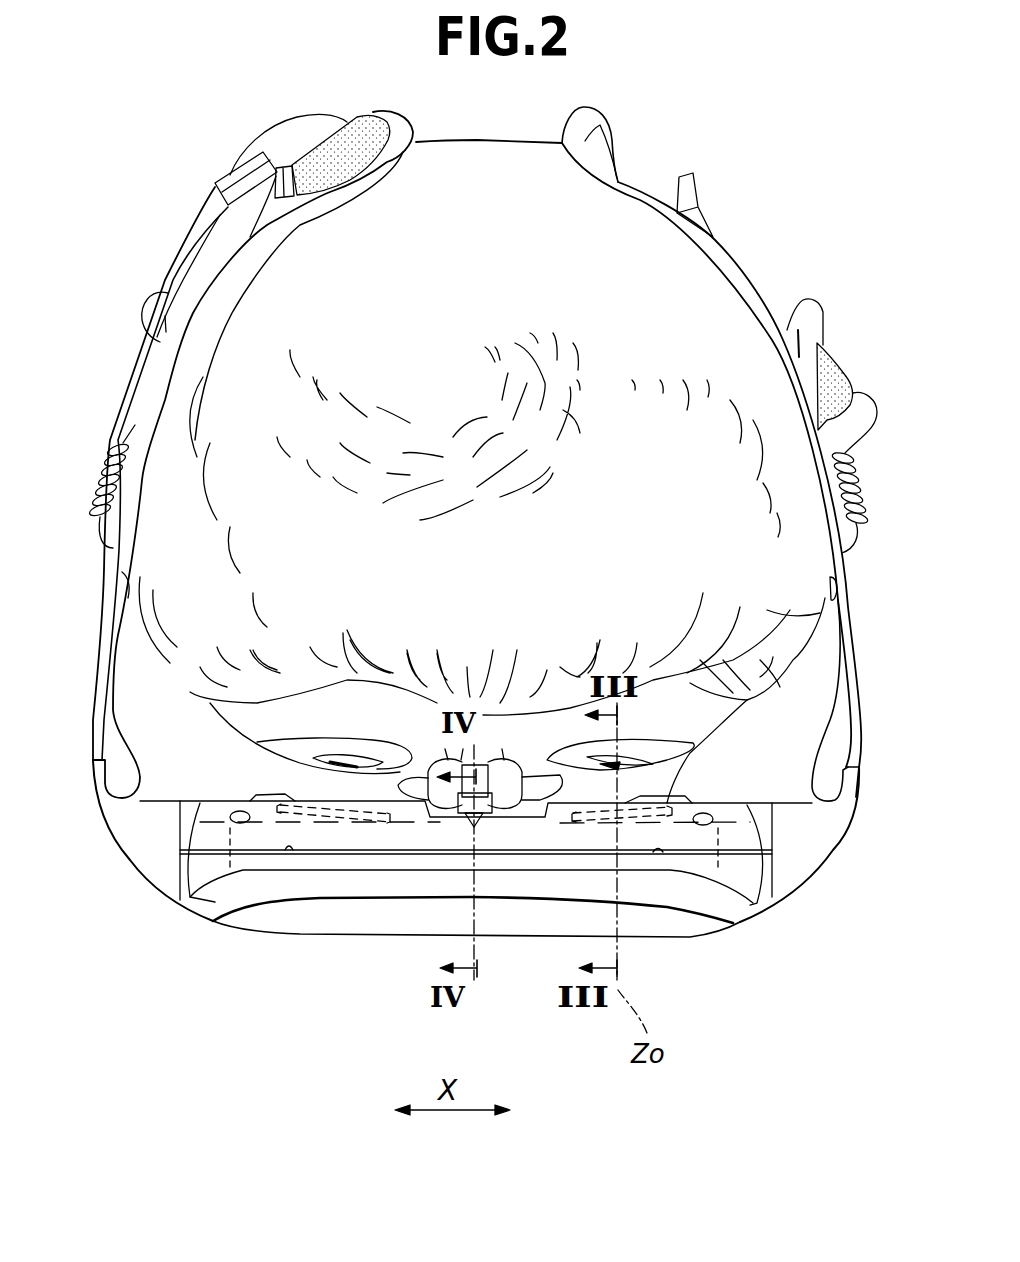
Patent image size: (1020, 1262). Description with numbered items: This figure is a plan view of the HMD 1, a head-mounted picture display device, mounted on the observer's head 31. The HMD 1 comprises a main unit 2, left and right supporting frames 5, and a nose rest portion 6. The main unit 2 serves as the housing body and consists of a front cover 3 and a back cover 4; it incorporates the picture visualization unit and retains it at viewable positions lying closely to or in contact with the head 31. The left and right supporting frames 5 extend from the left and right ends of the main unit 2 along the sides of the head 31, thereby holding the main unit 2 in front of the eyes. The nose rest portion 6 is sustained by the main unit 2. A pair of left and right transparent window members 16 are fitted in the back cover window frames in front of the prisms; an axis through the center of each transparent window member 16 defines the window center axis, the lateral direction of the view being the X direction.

The HMD 1 is at (166, 919).
The main unit 2 is at (757, 920).
The front cover 3 is at (667, 940).
The back cover 4 is at (743, 803).
The supporting frames 5 is at (104, 613).
The nose rest portion 6 is at (515, 763).
The transparent window members 16 is at (325, 815).
The observer's head 31 is at (770, 610).